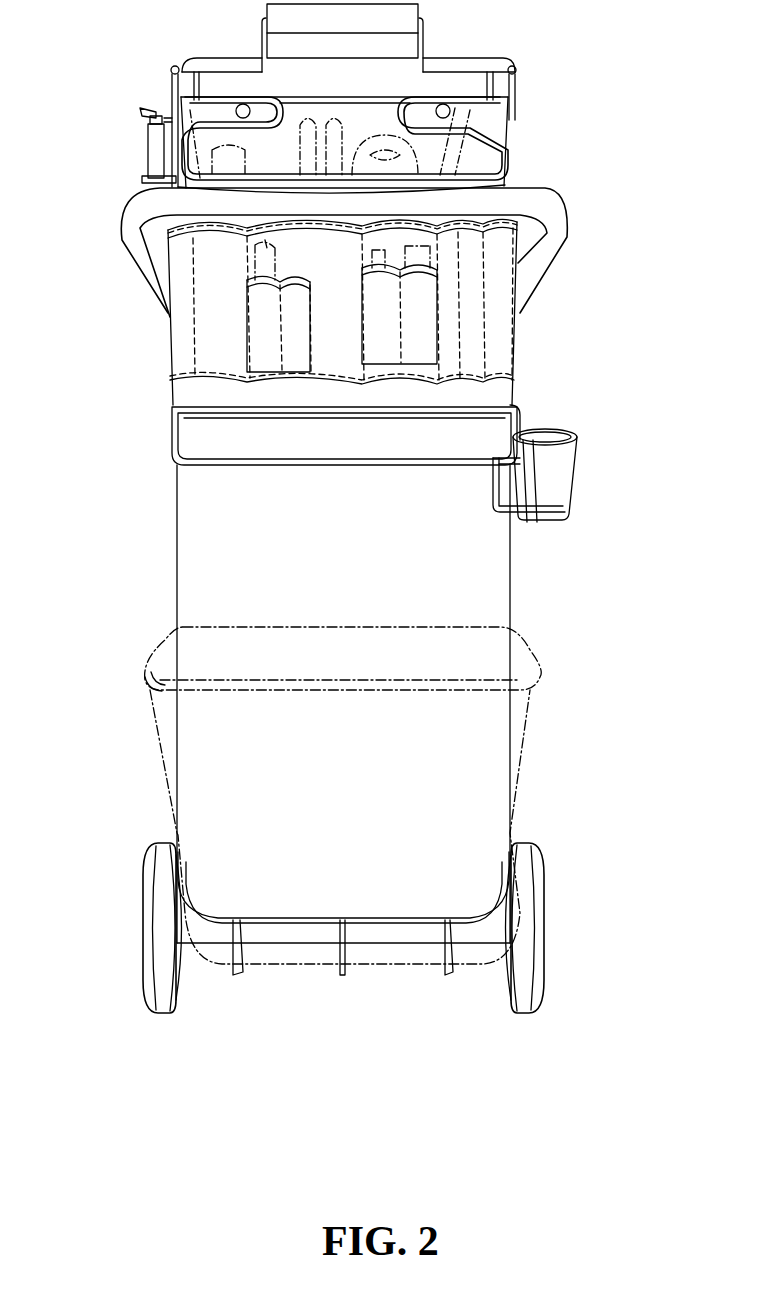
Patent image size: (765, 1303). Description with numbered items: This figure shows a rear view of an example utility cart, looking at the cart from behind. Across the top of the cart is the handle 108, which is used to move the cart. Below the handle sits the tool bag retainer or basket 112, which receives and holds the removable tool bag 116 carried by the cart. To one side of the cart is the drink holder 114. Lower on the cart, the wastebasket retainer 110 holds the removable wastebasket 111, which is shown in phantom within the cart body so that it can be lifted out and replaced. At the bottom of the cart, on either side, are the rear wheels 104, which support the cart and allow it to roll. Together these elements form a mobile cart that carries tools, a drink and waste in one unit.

The rear wheel 104 is at (150, 850).
The handle 108 is at (135, 203).
The wastebasket retainer 110 is at (237, 975).
The removable wastebasket 111 is at (148, 660).
The tool bag retainer 112 is at (172, 407).
The drink holder 114 is at (538, 430).
The removable tool bag 116 is at (146, 86).